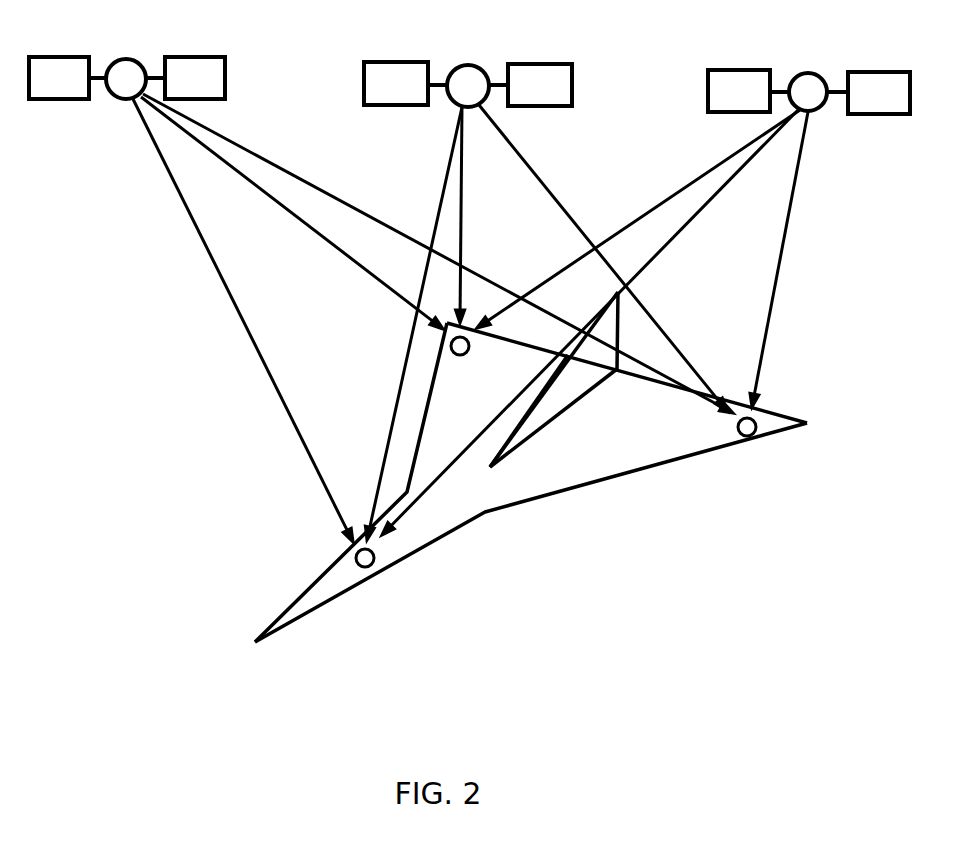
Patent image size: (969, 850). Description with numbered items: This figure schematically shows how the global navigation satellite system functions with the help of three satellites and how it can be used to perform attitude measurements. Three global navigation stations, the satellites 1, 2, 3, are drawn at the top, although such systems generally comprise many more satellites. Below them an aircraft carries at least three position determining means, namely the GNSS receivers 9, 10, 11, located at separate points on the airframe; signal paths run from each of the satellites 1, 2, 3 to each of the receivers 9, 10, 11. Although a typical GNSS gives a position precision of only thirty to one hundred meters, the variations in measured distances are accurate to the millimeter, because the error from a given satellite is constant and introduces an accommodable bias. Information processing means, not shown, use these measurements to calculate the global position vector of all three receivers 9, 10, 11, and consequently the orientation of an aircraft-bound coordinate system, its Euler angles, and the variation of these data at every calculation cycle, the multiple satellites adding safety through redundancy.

The satellite 1 is at (127, 57).
The satellite 2 is at (468, 64).
The satellite 3 is at (809, 71).
The GNSS receiver 9 is at (474, 360).
The GNSS receiver 10 is at (388, 577).
The GNSS receiver 11 is at (766, 444).